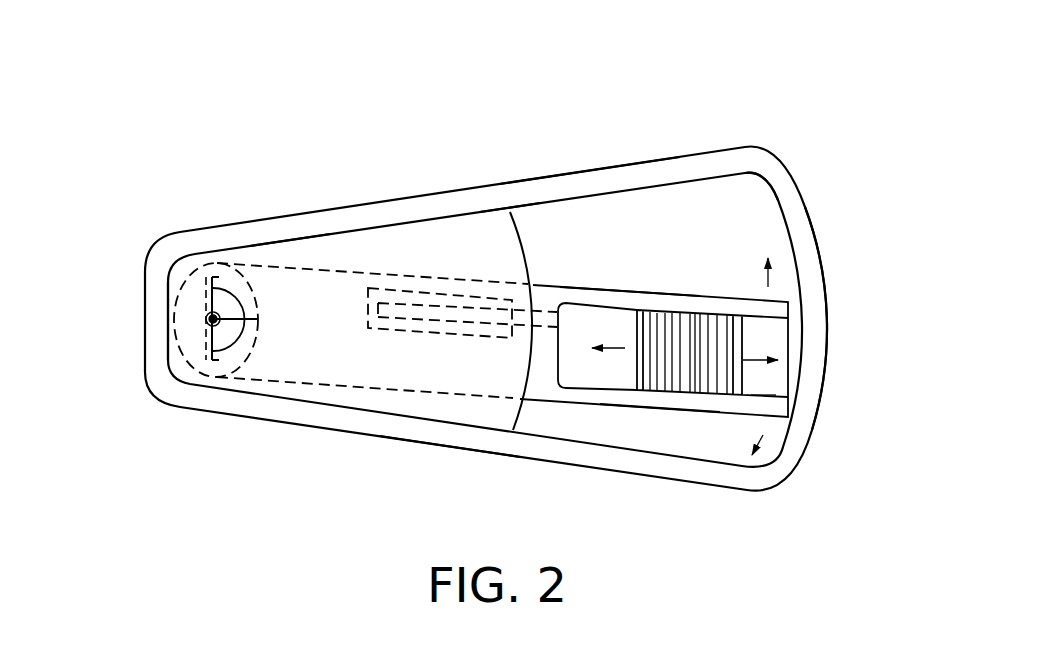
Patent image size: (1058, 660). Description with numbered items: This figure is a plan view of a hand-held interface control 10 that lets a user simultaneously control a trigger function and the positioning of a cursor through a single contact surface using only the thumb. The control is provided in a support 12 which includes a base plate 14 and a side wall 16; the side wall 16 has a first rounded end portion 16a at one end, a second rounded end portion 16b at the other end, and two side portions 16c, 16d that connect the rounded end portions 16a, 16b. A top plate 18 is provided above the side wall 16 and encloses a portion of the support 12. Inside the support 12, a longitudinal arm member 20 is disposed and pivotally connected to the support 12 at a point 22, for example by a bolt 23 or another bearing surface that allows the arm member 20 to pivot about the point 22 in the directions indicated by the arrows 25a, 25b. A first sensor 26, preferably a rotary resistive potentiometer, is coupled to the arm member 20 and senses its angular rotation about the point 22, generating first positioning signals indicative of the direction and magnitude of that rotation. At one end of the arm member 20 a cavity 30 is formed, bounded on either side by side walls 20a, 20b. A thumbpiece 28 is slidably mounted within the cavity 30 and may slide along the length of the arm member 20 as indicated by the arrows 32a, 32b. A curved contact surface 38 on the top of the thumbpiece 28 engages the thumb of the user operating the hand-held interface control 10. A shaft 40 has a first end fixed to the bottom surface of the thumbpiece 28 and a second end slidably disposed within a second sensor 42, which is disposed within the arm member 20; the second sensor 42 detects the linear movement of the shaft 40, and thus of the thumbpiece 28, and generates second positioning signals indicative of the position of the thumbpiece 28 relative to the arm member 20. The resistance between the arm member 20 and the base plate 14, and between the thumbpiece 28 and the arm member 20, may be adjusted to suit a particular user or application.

The hand-held interface control 10 is at (505, 90).
The support 12 is at (683, 157).
The base plate 14 is at (743, 208).
The side wall 16 is at (753, 157).
The first rounded end portion 16a is at (158, 314).
The second rounded end portion 16b is at (813, 317).
The side portion 16c is at (437, 438).
The side portion 16d is at (585, 180).
The top plate 18 is at (317, 211).
The longitudinal arm member 20 is at (537, 382).
The side wall 20a is at (652, 400).
The side wall 20b is at (615, 297).
The point 22 is at (223, 332).
The bolt 23 is at (210, 320).
The arrow 25a is at (765, 437).
The arrow 25b is at (770, 277).
The first sensor 26 is at (248, 340).
The thumbpiece 28 is at (687, 378).
The cavity 30 is at (600, 373).
The arrow 32a is at (622, 348).
The arrow 32b is at (760, 352).
The curved contact surface 38 is at (701, 363).
The shaft 40 is at (474, 312).
The second sensor 42 is at (437, 293).